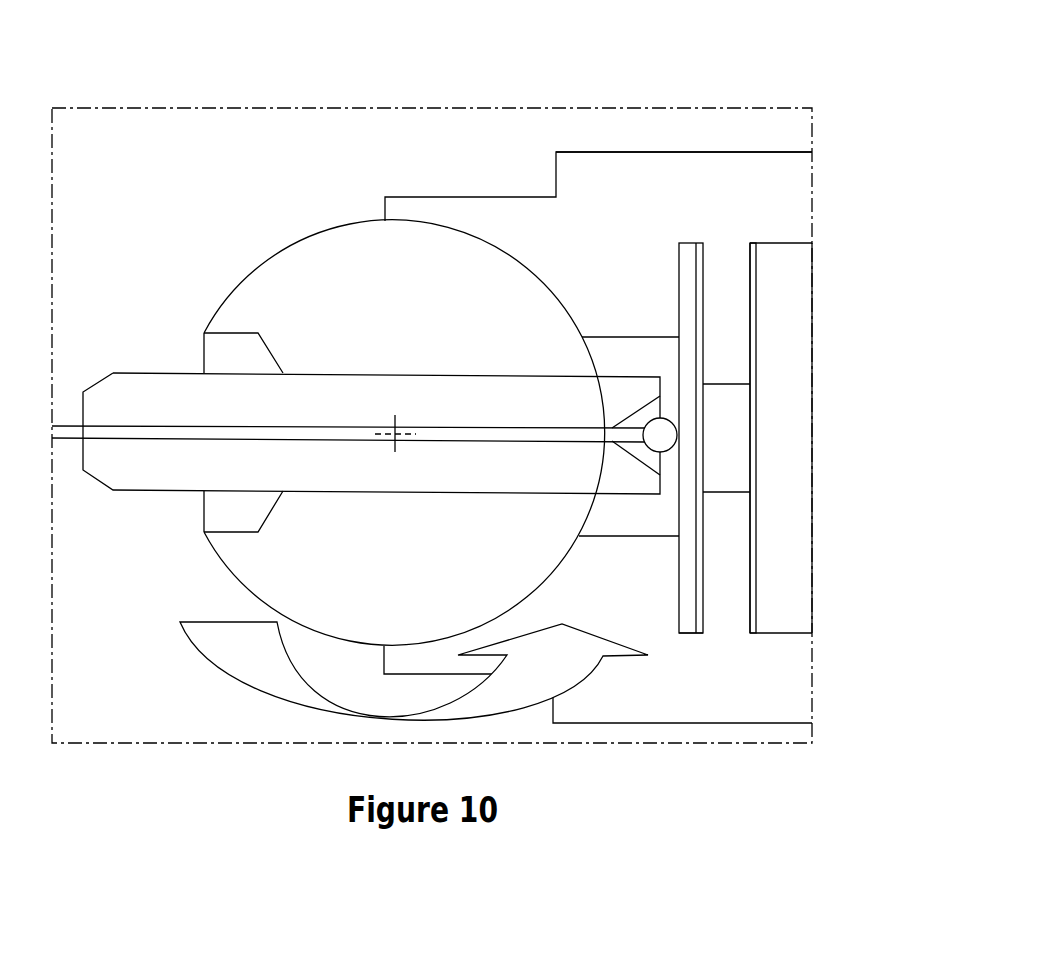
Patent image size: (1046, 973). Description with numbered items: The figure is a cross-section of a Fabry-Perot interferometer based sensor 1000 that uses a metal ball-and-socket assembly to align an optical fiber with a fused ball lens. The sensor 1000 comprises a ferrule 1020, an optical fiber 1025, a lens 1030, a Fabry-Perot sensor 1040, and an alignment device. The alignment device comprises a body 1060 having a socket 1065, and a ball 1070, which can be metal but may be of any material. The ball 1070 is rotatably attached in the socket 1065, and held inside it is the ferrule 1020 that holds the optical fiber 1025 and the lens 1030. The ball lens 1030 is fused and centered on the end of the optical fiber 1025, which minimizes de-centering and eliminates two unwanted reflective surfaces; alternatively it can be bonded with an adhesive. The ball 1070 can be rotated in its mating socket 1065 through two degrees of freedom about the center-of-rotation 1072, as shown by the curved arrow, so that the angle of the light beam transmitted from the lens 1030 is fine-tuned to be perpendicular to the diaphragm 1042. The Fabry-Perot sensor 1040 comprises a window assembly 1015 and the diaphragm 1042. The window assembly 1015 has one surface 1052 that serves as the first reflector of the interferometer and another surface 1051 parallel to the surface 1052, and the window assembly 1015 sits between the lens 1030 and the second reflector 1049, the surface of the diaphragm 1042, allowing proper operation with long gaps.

The Fabry-Perot interferometer based sensor 1000 is at (828, 210).
The body 1060 is at (474, 152).
The socket 1065 is at (580, 177).
The ball 1070 is at (237, 577).
The center-of-rotation 1072 is at (399, 432).
The ferrule 1020 is at (148, 483).
The optical fiber 1025 is at (62, 423).
The lens 1030 is at (660, 432).
The surface 1051 is at (703, 447).
The second reflector 1049 is at (757, 418).
The surface 1052 is at (752, 440).
The window assembly 1015 is at (722, 448).
The diaphragm 1042 is at (803, 313).
The Fabry-Perot sensor 1040 is at (742, 640).